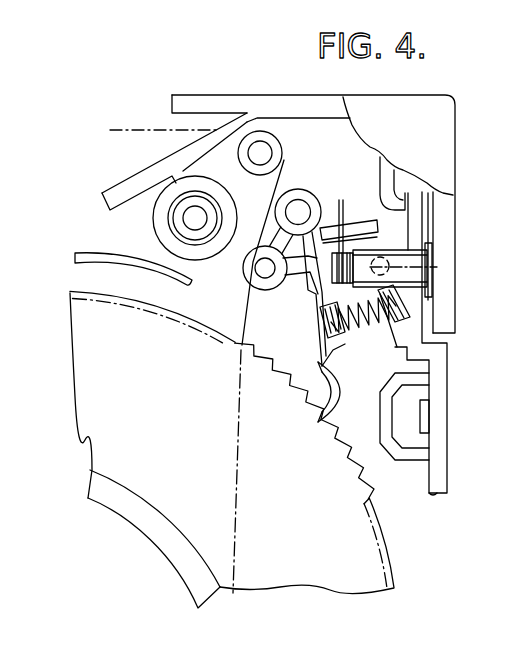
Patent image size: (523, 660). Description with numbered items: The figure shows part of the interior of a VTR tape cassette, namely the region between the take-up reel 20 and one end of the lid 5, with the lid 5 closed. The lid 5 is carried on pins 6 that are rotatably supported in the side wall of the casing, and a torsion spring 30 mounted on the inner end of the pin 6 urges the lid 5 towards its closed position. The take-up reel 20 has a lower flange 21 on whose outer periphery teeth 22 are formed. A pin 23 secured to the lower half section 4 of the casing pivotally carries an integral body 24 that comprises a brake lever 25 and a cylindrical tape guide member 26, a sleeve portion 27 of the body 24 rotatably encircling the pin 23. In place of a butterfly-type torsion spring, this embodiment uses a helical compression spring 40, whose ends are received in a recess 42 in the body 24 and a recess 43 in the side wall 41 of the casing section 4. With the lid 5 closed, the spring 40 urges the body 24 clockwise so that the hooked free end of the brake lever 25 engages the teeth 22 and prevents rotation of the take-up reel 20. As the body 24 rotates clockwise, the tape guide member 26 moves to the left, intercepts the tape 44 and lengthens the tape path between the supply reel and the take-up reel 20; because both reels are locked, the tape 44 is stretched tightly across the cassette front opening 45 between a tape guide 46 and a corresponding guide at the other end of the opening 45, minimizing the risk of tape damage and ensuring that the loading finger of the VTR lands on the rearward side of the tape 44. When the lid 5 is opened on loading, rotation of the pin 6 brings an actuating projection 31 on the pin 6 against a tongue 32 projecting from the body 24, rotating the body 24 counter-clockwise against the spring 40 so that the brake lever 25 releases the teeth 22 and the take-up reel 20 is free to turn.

The lower half section 4 is at (440, 430).
The lid 5 is at (447, 238).
The pins 6 is at (427, 280).
The take-up reel 20 is at (357, 545).
The lower flange 21 is at (380, 517).
The teeth 22 is at (337, 462).
The pin 23 is at (304, 208).
The integral body 24 is at (345, 386).
The brake lever 25 is at (322, 367).
The tape guide member 26 is at (248, 280).
The sleeve portion 27 is at (300, 190).
The torsion spring 30 is at (370, 237).
The actuating projection 31 is at (437, 266).
The tongue 32 is at (372, 223).
The helical compression spring 40 is at (410, 330).
The side wall 41 is at (438, 362).
The recess 42 is at (320, 372).
The recess 43 is at (405, 310).
The tape 44 is at (251, 226).
The front opening 45 is at (146, 111).
The tape guide 46 is at (267, 137).